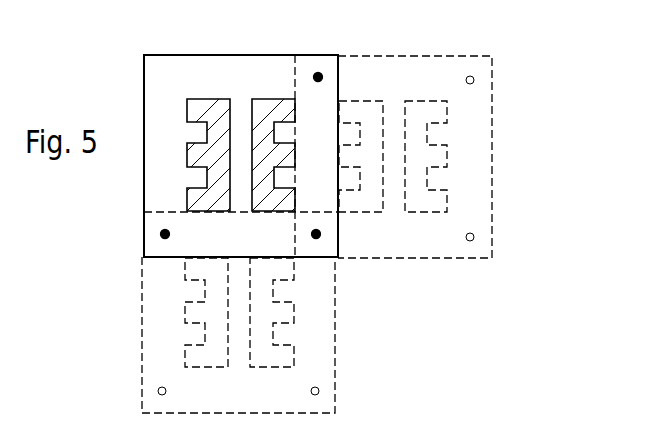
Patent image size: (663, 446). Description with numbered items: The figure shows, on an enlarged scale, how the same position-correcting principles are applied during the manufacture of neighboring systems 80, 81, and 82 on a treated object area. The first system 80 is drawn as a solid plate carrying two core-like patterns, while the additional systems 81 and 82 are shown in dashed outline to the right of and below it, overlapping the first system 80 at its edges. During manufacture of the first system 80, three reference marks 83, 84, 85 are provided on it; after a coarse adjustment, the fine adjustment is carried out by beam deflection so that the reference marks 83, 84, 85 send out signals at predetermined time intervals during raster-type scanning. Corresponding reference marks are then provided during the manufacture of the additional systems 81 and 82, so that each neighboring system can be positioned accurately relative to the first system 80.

The first system 80 is at (218, 65).
The neighboring system 81 is at (410, 76).
The neighboring system 82 is at (315, 352).
The reference mark 83 is at (161, 234).
The reference mark 84 is at (316, 234).
The reference mark 85 is at (318, 73).